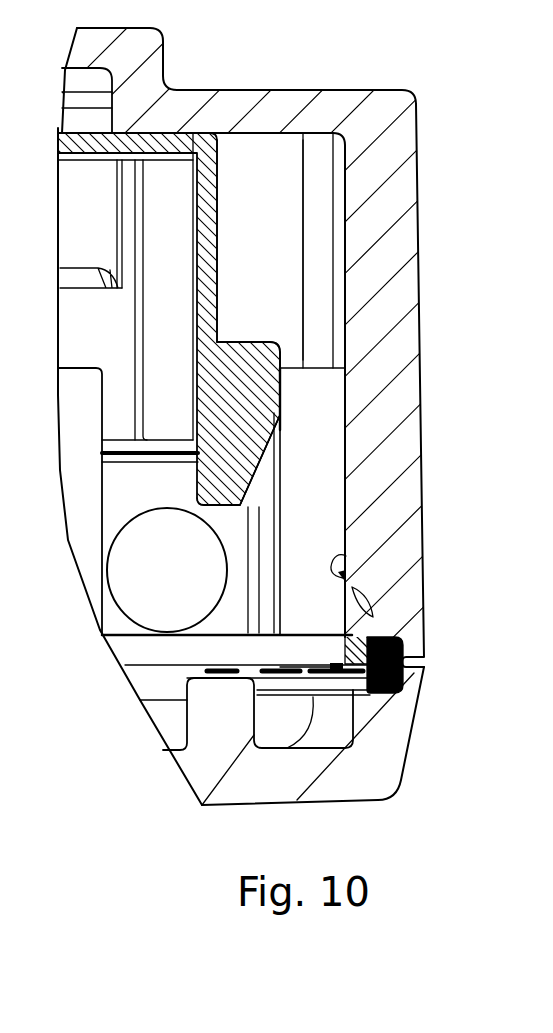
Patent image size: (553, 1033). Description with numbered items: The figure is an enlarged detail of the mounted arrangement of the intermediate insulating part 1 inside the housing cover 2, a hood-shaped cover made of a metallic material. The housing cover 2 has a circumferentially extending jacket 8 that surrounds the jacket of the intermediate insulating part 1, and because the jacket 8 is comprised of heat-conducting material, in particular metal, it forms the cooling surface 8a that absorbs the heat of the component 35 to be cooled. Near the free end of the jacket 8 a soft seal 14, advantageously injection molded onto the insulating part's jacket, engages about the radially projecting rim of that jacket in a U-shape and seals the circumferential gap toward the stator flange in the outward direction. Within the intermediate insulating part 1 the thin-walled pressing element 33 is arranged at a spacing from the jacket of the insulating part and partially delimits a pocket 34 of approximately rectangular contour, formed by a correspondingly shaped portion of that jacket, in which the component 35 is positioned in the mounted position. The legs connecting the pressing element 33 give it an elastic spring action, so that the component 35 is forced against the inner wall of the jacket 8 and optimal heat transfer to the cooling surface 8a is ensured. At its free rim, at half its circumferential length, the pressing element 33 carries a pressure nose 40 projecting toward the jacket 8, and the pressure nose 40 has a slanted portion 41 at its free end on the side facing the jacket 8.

The intermediate insulating part 1 is at (178, 148).
The housing cover 2 is at (380, 86).
The jacket 8 is at (377, 265).
The cooling surface 8a is at (375, 556).
The soft seal 14 is at (421, 690).
The pressing element 33 is at (222, 229).
The pocket 34 is at (243, 291).
The component 35 is at (310, 555).
The pressure nose 40 is at (238, 377).
The slanted portion 41 is at (247, 507).